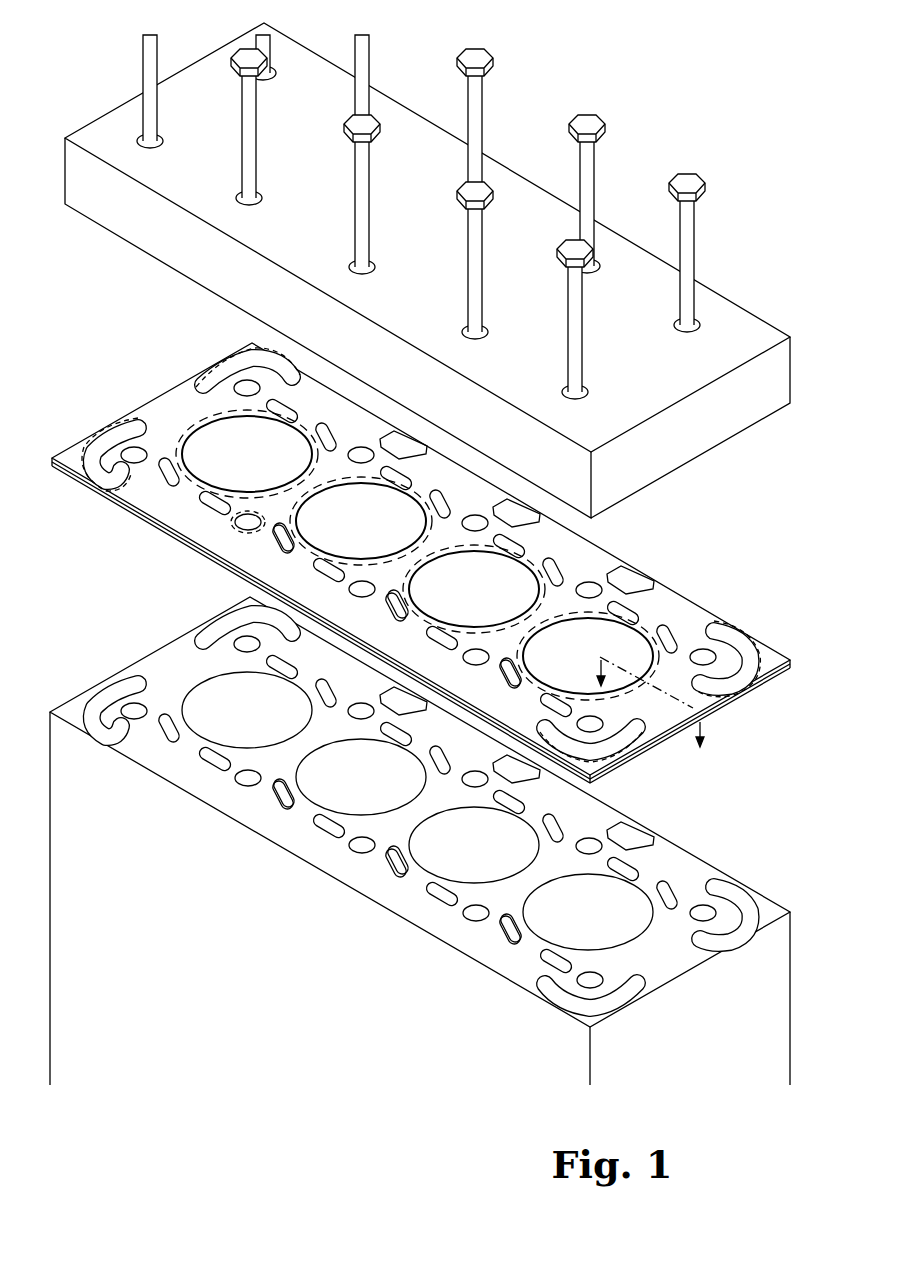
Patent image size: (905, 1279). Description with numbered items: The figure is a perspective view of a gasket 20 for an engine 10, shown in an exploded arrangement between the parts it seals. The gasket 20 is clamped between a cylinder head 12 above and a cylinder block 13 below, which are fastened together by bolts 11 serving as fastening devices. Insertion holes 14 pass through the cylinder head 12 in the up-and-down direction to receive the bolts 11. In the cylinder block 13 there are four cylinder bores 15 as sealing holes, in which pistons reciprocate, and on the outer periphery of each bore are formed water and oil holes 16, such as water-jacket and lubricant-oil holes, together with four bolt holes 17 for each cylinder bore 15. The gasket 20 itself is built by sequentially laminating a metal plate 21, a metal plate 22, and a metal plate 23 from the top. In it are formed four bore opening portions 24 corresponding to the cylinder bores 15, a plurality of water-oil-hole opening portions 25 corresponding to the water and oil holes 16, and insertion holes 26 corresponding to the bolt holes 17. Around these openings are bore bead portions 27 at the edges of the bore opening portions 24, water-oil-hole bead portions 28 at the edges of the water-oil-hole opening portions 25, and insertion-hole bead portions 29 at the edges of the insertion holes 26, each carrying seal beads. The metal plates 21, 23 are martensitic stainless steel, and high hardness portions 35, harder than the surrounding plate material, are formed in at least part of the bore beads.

The engine 10 is at (421, 554).
The bolts 11 is at (165, 101).
The cylinder head 12 is at (513, 168).
The cylinder block 13 is at (140, 660).
The insertion holes 14 is at (162, 145).
The cylinder bores 15 is at (234, 721).
The water and oil holes 16 is at (637, 832).
The bolt holes 17 is at (707, 903).
The gasket 20 is at (421, 548).
The metal plate 21 is at (722, 702).
The metal plate 22 is at (727, 709).
The metal plate 23 is at (731, 716).
The bore opening portions 24 is at (232, 463).
The water-oil-hole opening portions 25 is at (126, 437).
The insertion holes 26 is at (248, 530).
The bore bead portions 27 is at (198, 482).
The water-oil-hole bead portions 28 is at (148, 445).
The insertion-hole bead portions 29 is at (252, 534).
The high hardness portions 35 is at (206, 413).